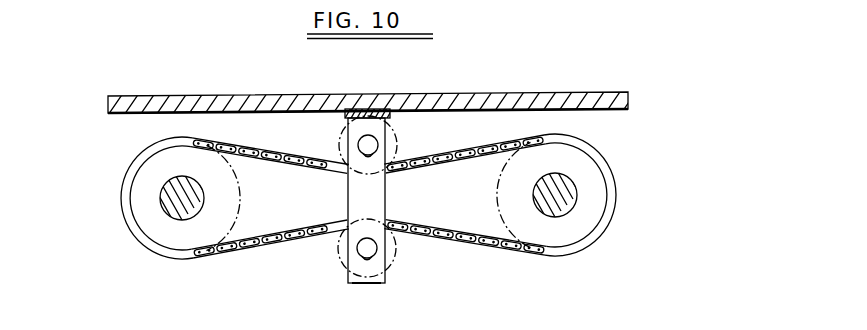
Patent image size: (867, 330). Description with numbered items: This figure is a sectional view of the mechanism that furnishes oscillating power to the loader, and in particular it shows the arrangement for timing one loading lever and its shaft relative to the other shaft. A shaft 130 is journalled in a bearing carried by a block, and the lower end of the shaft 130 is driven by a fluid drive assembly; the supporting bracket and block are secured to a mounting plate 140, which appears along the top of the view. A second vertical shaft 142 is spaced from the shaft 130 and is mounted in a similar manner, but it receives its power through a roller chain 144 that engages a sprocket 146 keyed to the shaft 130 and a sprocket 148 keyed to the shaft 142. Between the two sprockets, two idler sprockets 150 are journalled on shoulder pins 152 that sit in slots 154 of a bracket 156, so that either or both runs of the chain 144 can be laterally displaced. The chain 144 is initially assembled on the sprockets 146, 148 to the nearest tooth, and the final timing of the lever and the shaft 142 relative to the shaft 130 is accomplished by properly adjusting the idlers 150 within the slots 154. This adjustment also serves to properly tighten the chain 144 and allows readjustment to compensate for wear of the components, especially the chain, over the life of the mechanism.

The mounting plate 140 is at (492, 96).
The slots 154 is at (355, 228).
The shoulder pins 152 is at (366, 146).
The idler sprockets 150 is at (396, 137).
The sprocket 146 is at (143, 180).
The sprocket 148 is at (590, 172).
The shaft 130 is at (178, 212).
The second vertical shaft 142 is at (568, 206).
The roller chain 144 is at (487, 245).
The bracket 156 is at (368, 284).